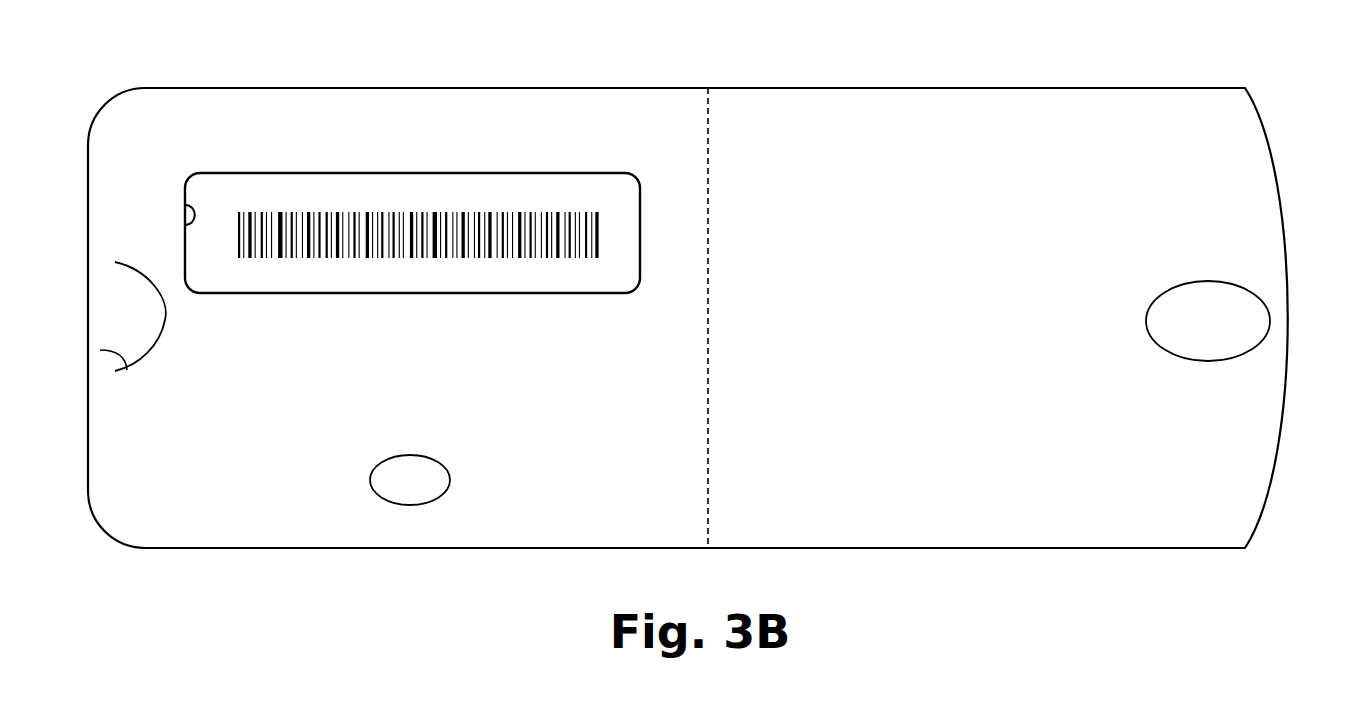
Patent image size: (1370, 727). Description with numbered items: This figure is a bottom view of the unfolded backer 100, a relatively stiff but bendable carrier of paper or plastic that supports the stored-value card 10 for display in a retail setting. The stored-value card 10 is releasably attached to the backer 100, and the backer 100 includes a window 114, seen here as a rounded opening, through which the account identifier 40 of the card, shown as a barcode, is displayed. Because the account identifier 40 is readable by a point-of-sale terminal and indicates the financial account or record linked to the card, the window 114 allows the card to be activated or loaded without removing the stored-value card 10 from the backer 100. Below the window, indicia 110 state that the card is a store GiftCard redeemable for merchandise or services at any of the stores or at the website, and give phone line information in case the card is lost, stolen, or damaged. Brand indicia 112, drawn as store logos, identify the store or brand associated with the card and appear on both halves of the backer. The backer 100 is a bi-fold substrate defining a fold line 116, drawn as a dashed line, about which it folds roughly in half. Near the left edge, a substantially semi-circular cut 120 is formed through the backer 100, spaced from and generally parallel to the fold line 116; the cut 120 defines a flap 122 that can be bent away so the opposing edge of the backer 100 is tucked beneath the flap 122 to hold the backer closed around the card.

The backer 100 is at (1080, 61).
The stored-value card 10 is at (367, 192).
The account identifier 40 is at (280, 212).
The indicia 110 is at (278, 450).
The brand indicia 112 is at (432, 492).
The window 114 is at (196, 221).
The fold line 116 is at (710, 120).
The cut 120 is at (100, 350).
The flap 122 is at (152, 307).